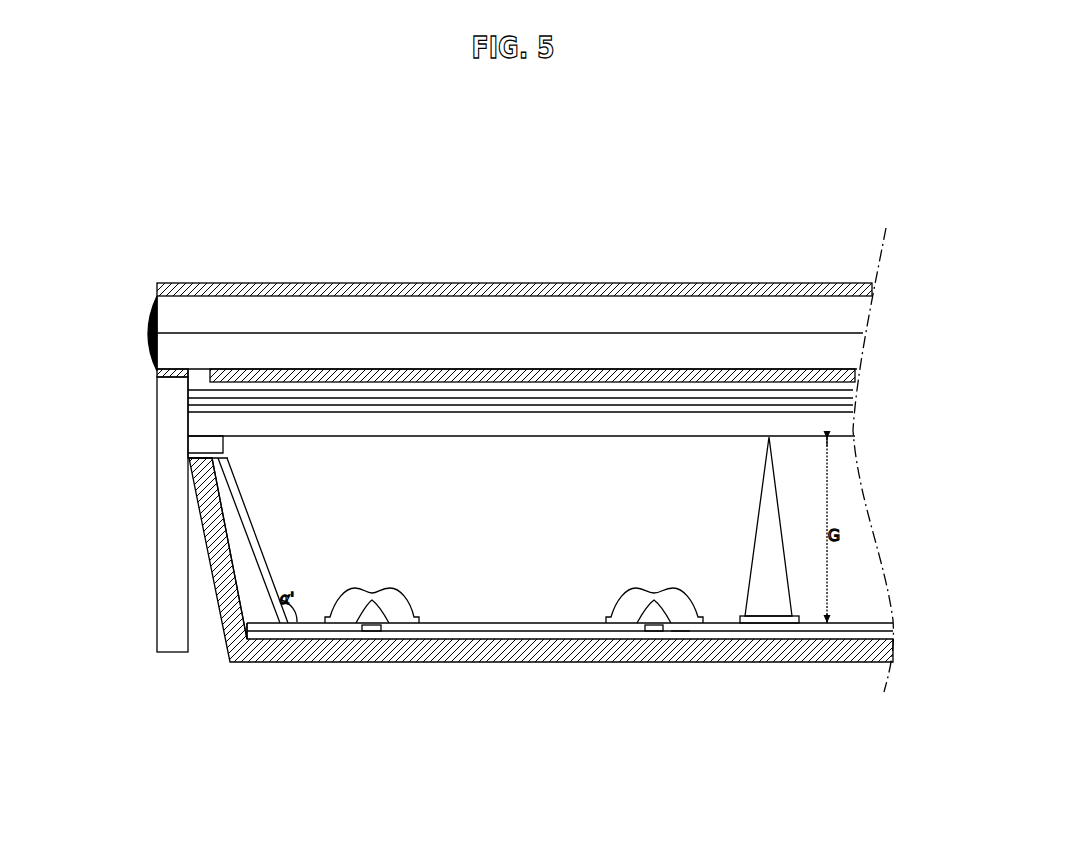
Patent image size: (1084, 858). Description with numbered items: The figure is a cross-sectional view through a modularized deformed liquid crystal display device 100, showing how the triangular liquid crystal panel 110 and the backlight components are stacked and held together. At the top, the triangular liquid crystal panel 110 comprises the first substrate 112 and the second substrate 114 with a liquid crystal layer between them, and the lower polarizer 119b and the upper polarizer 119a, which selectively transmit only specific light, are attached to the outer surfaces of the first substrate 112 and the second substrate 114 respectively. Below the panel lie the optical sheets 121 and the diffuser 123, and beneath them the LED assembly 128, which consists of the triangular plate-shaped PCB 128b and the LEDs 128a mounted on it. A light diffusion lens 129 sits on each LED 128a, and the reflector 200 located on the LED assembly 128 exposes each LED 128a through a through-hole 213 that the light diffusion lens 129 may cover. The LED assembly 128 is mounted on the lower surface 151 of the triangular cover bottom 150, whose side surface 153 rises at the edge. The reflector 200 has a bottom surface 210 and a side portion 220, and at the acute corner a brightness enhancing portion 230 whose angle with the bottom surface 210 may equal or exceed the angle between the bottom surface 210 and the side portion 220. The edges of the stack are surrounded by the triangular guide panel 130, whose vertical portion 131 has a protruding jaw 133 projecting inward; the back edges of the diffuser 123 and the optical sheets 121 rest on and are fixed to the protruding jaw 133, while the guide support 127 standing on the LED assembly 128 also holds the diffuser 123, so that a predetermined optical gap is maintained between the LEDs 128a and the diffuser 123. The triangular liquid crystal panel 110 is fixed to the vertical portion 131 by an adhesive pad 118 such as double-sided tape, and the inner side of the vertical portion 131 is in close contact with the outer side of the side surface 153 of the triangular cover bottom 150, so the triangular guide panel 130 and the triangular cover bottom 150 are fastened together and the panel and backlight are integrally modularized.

The deformed liquid crystal display device 100 is at (816, 206).
The triangular liquid crystal panel 110 is at (561, 332).
The first substrate 112 is at (847, 345).
The second substrate 114 is at (847, 318).
The adhesive pad 118 is at (157, 372).
The upper polarizer 119a is at (872, 289).
The lower polarizer 119b is at (855, 375).
The optical sheets 121 is at (855, 393).
The diffuser 123 is at (845, 425).
The guide support 127 is at (767, 543).
The LED assembly 128 is at (667, 681).
The LED 128a is at (650, 635).
The PCB 128b is at (680, 638).
The light diffusion lens 129 is at (630, 600).
The triangular guide panel 130 is at (135, 413).
The vertical portion 131 is at (177, 412).
The protruding jaw 133 is at (207, 444).
The triangular cover bottom 150 is at (525, 592).
The lower surface 151 is at (245, 642).
The side surface 153 is at (240, 592).
The reflector 200 is at (570, 710).
The bottom surface 210 is at (342, 647).
The through-hole 213 is at (390, 618).
The side portion 220 is at (337, 627).
The brightness enhancing portion 230 is at (262, 536).